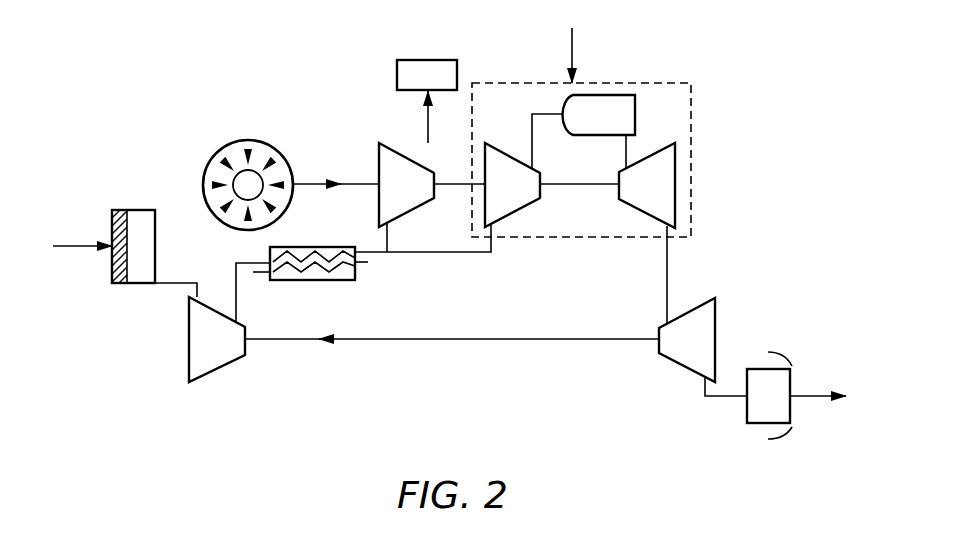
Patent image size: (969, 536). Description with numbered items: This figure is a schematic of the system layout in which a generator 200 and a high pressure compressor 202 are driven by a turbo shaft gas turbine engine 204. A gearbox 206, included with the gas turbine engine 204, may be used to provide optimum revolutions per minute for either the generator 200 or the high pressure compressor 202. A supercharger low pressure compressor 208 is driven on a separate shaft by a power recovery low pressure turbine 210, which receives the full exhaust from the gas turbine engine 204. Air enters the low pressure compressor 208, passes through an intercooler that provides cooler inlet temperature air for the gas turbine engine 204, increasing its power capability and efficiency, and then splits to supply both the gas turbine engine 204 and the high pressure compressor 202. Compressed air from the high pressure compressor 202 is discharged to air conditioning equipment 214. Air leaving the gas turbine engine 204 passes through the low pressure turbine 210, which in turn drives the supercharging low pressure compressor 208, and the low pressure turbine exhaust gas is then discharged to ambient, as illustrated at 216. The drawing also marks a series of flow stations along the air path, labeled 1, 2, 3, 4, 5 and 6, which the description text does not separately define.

The generator 200 is at (248, 140).
The high pressure compressor 202 is at (395, 151).
The air conditioning equipment 214 is at (430, 60).
The turbo shaft gas turbine engine 204 is at (691, 160).
The gearbox 206 is at (617, 95).
The supercharger low pressure compressor 208 is at (218, 368).
The power recovery low pressure turbine 210 is at (685, 366).
The LPT exhaust gas discharge 216 is at (747, 415).
The inlet station 1 is at (98, 247).
The station 2 is at (176, 298).
The station 3 is at (538, 141).
The station 4 is at (637, 151).
The station 5 is at (726, 400).
The station 6 is at (818, 376).